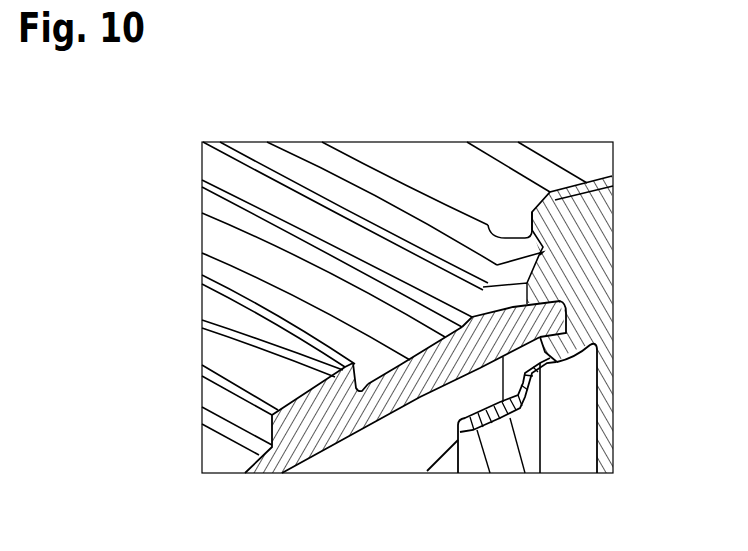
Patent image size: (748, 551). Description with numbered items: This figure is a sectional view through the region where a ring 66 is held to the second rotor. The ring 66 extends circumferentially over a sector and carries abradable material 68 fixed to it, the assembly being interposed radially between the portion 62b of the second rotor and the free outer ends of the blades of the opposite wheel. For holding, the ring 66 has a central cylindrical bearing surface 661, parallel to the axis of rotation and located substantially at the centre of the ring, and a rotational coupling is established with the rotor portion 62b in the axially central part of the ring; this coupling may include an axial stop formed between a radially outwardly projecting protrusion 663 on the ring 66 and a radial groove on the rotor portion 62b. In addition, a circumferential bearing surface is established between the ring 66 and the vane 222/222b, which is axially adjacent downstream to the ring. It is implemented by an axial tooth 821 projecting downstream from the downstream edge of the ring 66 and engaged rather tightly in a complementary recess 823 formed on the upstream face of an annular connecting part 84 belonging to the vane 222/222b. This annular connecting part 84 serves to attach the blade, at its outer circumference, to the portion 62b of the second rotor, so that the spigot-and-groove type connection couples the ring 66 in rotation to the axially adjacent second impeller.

The portion of the second rotor 62b is at (424, 165).
The annular connecting part 84 is at (565, 283).
The complementary recess 823 is at (566, 312).
The axial tooth 821 is at (599, 347).
The radially outwardly projecting protrusion 663 is at (330, 374).
The central cylindrical bearing surface 661 is at (278, 390).
The abradable material 68 is at (350, 447).
The ring 66 is at (390, 406).
The vane 222 is at (445, 466).
The vane 222b is at (539, 433).